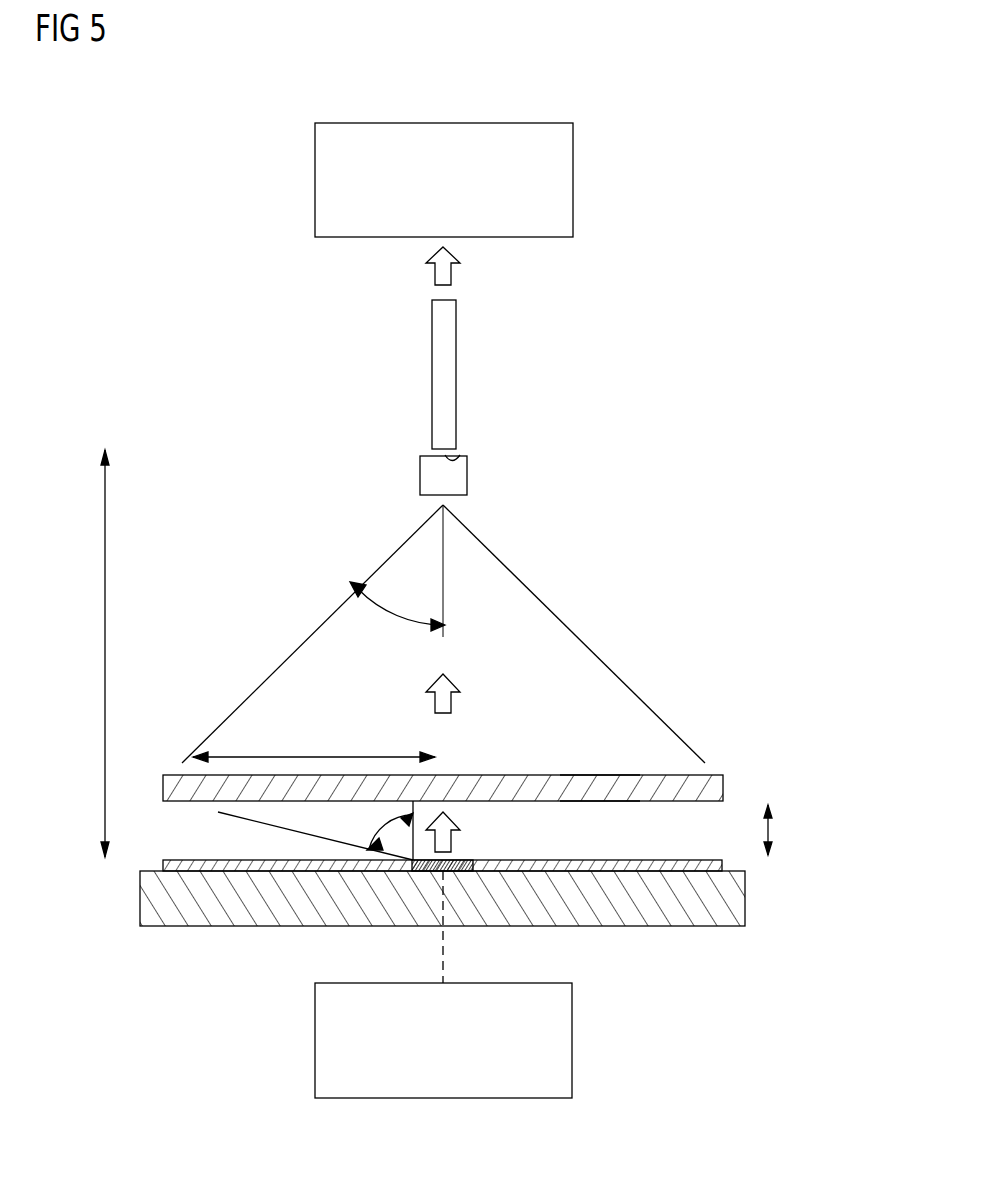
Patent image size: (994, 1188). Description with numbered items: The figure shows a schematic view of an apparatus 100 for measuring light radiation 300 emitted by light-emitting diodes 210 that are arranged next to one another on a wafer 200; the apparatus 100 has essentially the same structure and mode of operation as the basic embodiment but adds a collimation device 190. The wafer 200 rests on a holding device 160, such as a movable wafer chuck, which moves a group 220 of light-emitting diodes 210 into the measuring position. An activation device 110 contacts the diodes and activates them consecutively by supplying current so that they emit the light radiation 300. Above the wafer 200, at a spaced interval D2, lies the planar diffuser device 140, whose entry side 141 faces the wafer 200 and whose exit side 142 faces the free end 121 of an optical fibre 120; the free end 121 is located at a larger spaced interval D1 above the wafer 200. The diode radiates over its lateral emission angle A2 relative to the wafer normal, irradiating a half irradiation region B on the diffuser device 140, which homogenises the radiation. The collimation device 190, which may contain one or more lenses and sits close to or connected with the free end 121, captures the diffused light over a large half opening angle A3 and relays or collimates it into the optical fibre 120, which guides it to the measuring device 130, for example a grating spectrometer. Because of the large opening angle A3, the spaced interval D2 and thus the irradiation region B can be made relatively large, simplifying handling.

The apparatus 100 is at (193, 122).
The activation device 110 is at (572, 1040).
The optical fibre 120 is at (456, 380).
The free end 121 is at (460, 456).
The measuring device 130 is at (573, 181).
The diffuser device 140 is at (723, 787).
The entry side 141 is at (588, 801).
The exit side 142 is at (597, 773).
The holding device 160 is at (745, 903).
The collimation device 190 is at (467, 482).
The wafer 200 is at (615, 866).
The light-emitting diodes 210 is at (477, 918).
The group 220 is at (473, 868).
The light radiation 300 is at (452, 280).
The emission angle A2 is at (391, 820).
The opening angle A3 is at (390, 613).
The irradiation region B is at (314, 756).
The spaced interval D1 is at (103, 641).
The spaced interval D2 is at (769, 826).